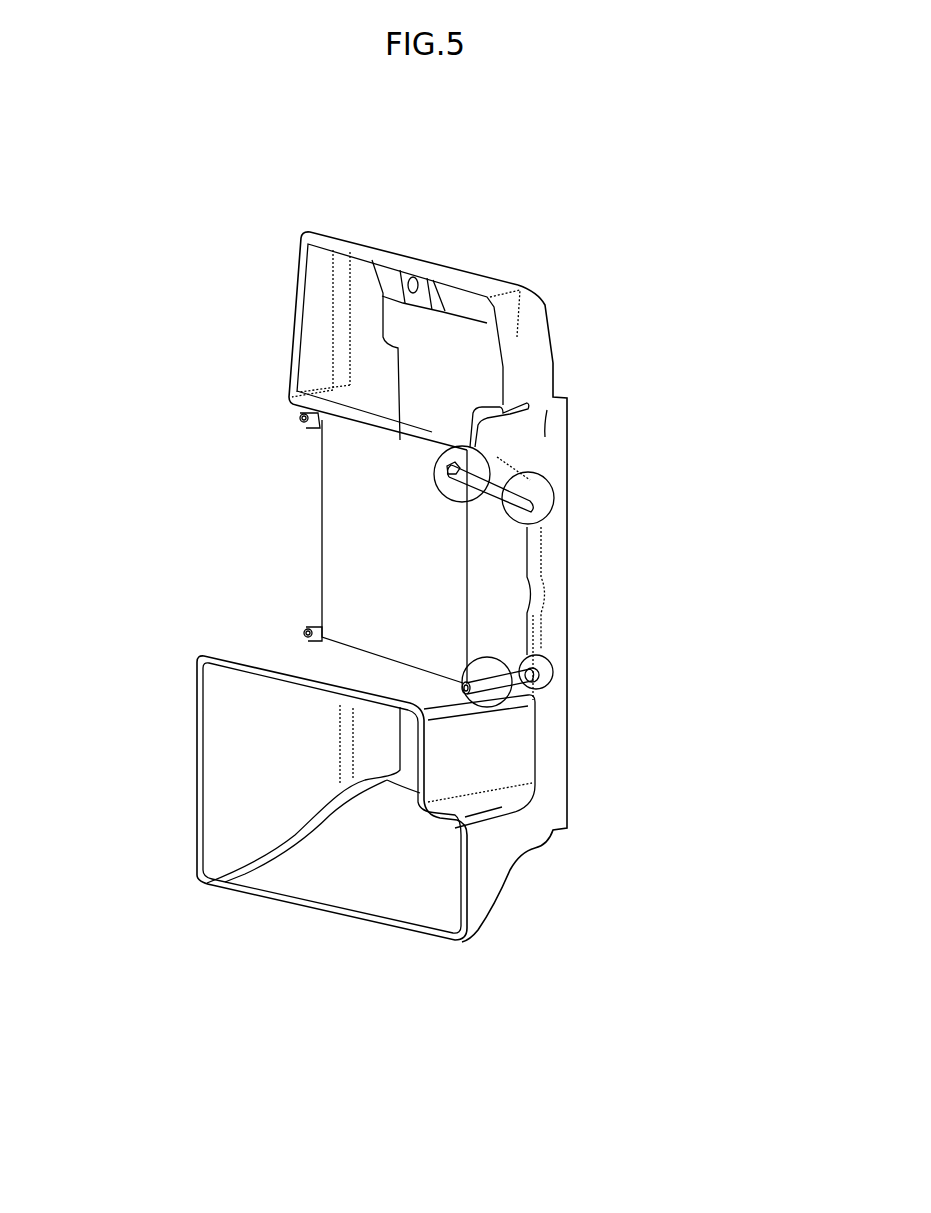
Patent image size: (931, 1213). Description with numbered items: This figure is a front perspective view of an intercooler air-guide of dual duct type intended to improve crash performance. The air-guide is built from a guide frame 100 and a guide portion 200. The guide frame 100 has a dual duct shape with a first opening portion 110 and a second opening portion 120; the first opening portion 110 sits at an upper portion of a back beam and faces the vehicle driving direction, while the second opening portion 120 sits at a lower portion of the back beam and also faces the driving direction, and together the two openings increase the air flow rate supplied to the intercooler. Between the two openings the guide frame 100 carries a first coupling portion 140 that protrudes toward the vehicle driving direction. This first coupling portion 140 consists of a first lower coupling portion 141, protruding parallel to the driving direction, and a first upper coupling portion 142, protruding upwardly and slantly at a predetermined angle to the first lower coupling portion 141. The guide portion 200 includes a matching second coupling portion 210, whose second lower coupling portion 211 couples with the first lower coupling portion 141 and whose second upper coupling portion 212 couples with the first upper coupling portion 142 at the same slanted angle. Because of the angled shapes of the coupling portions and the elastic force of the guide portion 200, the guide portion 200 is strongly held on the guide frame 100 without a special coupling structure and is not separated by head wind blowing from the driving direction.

The guide frame 100 is at (545, 737).
The first opening portion 110 is at (363, 318).
The second opening portion 120 is at (388, 880).
The first coupling portion 140 is at (722, 530).
The first lower coupling portion 141 is at (548, 672).
The first upper coupling portion 142 is at (548, 500).
The guide portion 200 is at (345, 482).
The second coupling portion 210 is at (150, 515).
The second lower coupling portion 211 is at (460, 684).
The second upper coupling portion 212 is at (448, 472).